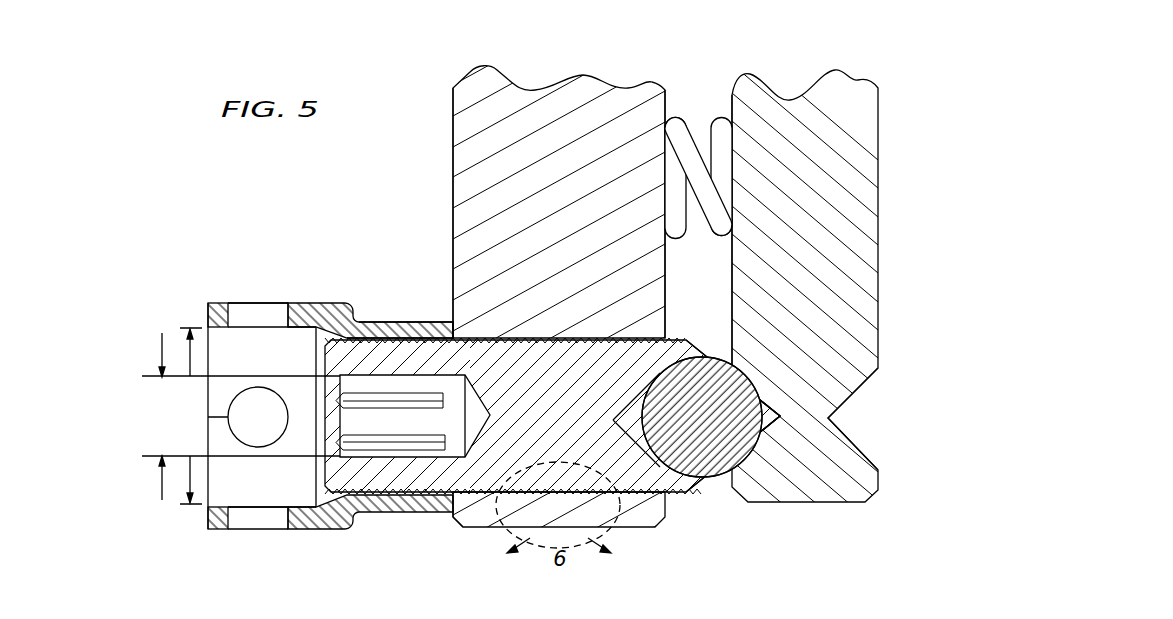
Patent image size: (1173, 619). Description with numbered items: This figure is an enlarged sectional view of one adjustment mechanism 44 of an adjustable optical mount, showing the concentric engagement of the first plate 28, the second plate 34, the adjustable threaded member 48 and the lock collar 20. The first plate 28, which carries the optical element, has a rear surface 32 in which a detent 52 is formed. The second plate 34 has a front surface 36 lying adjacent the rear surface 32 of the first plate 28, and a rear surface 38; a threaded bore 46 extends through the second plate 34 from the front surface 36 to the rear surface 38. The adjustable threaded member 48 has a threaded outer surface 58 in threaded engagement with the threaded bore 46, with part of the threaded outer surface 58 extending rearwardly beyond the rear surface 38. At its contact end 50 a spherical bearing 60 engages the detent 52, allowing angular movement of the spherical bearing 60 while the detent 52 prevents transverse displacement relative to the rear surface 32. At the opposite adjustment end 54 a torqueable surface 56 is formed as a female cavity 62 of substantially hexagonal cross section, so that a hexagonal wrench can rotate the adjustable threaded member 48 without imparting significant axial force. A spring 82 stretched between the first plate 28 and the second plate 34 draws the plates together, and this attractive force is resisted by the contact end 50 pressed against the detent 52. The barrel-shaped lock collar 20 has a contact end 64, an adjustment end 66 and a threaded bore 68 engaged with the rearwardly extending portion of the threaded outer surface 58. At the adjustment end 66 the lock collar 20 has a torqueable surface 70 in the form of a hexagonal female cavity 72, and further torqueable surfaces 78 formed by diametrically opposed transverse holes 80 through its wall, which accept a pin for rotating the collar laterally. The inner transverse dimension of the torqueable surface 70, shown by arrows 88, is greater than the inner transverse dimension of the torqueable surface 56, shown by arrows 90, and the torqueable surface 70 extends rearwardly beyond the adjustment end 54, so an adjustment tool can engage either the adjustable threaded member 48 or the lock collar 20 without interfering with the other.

The lock collar 20 is at (353, 320).
The first plate 28 is at (805, 327).
The rear surface 32 is at (732, 97).
The second plate 34 is at (559, 309).
The front surface 36 is at (667, 268).
The rear surface 38 is at (453, 108).
The adjustment mechanism 44 is at (380, 514).
The threaded bore 46 is at (655, 348).
The adjustable threaded member 48 is at (527, 352).
The contact end 50 is at (747, 378).
The detent 52 is at (773, 408).
The adjustment end 54 is at (345, 328).
The torqueable surface 56 is at (383, 375).
The threaded outer surface 58 is at (588, 352).
The spherical bearing 60 is at (706, 453).
The female cavity 62 is at (418, 425).
The contact end 64 is at (455, 506).
The adjustment end 66 is at (213, 300).
The threaded bore 68 is at (400, 346).
The torqueable surface 70 is at (305, 505).
The female cavity 72 is at (232, 340).
The torqueable surfaces 78 is at (238, 520).
The transverse holes 80 is at (267, 318).
The spring 82 is at (678, 128).
The arrows 88 is at (190, 505).
The arrows 90 is at (150, 376).